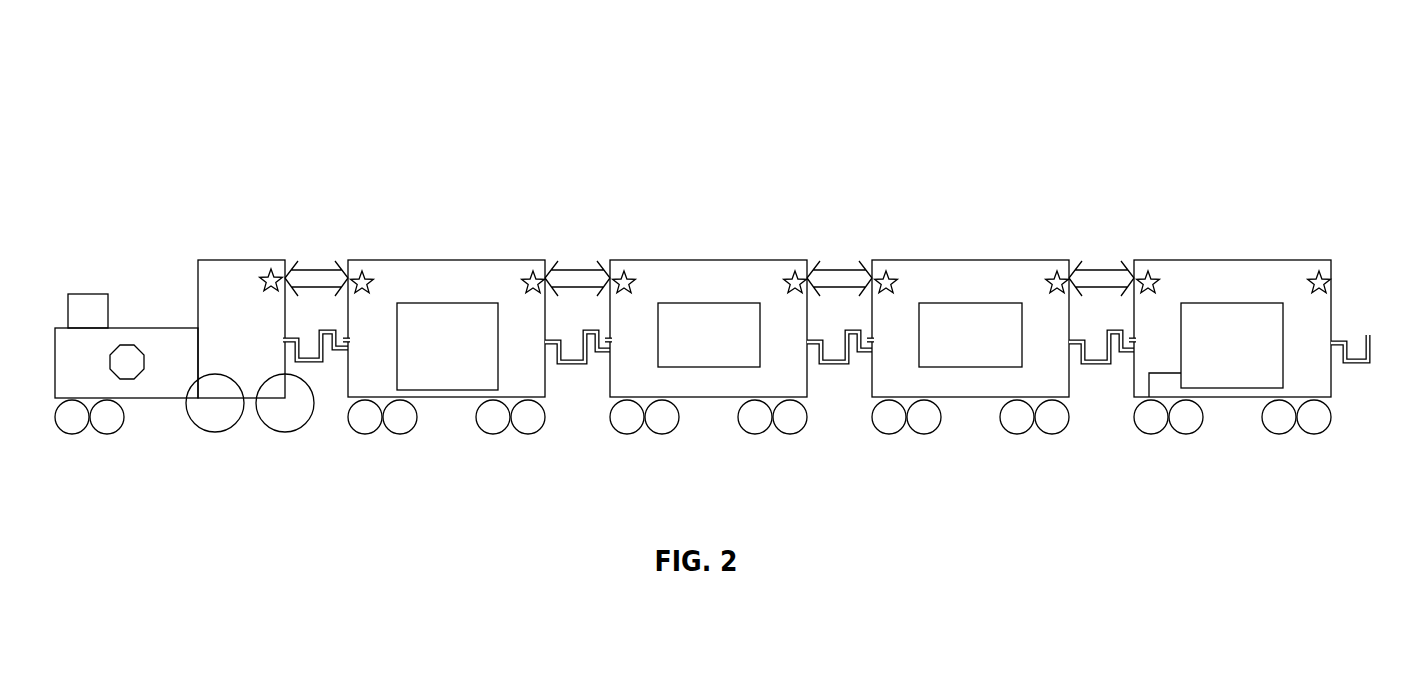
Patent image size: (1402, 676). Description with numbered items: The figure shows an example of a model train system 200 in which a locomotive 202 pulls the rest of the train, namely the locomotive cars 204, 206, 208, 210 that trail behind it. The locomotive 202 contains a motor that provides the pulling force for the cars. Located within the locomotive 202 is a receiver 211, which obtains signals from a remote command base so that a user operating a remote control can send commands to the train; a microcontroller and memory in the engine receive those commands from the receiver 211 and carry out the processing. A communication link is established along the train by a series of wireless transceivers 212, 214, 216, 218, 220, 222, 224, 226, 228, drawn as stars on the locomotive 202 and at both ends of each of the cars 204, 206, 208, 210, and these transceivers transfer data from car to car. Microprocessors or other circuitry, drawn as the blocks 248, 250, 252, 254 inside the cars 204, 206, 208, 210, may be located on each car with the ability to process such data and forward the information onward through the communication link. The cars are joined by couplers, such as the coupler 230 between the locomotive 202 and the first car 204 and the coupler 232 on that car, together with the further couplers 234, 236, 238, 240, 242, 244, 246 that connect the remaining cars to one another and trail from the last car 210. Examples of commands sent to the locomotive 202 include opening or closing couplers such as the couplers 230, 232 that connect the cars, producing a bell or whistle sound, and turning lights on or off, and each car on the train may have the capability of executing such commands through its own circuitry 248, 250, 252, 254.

The toy train set 200 is at (163, 89).
The locomotive 202 is at (138, 323).
The locomotive car 204 is at (478, 259).
The locomotive car 206 is at (740, 259).
The locomotive car 208 is at (1002, 259).
The locomotive car 210 is at (1264, 259).
The receiver 211 is at (129, 382).
The wireless transceiver 212 is at (270, 268).
The wireless transceiver 214 is at (358, 270).
The wireless transceiver 216 is at (530, 270).
The wireless transceiver 218 is at (620, 270).
The wireless transceiver 220 is at (792, 270).
The wireless transceiver 222 is at (882, 270).
The wireless transceiver 224 is at (1054, 270).
The wireless transceiver 226 is at (1144, 270).
The wireless transceiver 228 is at (1316, 270).
The coupler 230 is at (284, 339).
The coupler 232 is at (348, 339).
The car rear coupler 234 is at (545, 339).
The car front coupler 236 is at (610, 339).
The car rear coupler 238 is at (807, 339).
The car front coupler 240 is at (872, 339).
The car rear coupler 242 is at (1069, 339).
The car front coupler 244 is at (1134, 339).
The car rear coupler 246 is at (1331, 339).
The coupler control module 248 is at (451, 382).
The sound module 250 is at (725, 358).
The lights module 252 is at (965, 357).
The lights, sound and motor module 254 is at (1248, 383).